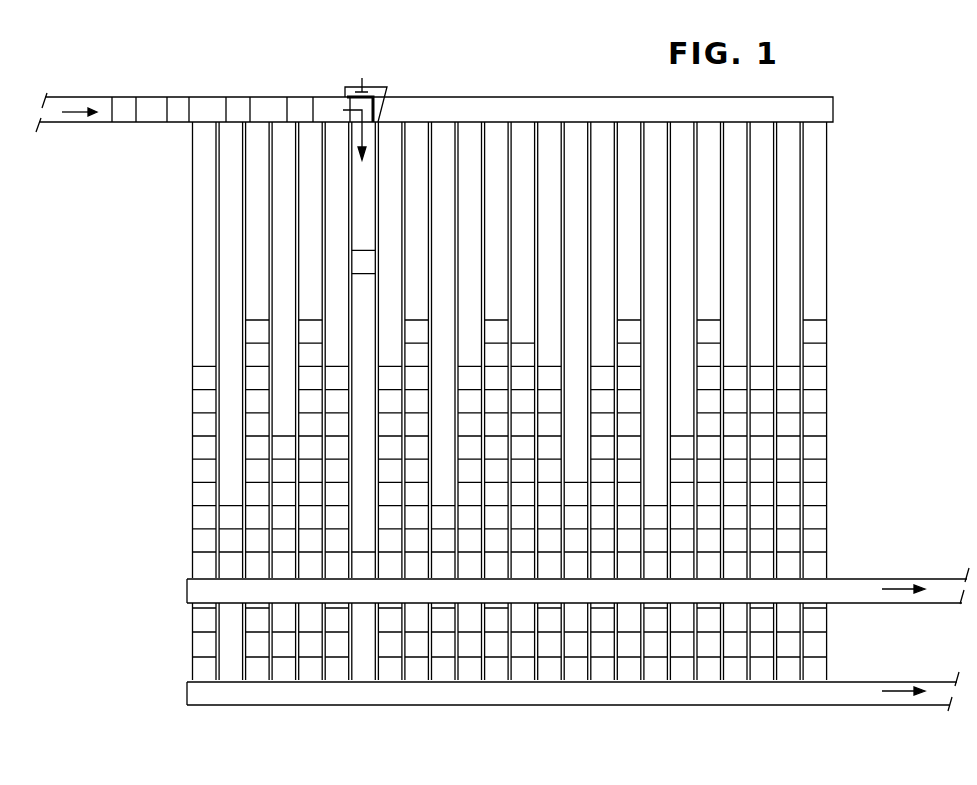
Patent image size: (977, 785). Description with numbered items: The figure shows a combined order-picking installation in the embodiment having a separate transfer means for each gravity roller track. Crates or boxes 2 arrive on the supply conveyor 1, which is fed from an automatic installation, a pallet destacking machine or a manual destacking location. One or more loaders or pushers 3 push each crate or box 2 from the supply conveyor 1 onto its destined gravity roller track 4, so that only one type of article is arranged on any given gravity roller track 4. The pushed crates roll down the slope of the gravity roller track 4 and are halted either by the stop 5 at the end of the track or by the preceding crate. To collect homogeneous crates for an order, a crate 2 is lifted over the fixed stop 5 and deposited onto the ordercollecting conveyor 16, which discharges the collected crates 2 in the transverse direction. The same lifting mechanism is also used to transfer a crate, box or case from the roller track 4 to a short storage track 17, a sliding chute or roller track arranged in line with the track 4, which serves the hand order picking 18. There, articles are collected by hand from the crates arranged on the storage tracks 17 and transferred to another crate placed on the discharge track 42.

The supply conveyor 1 is at (73, 105).
The crates or boxes 2 is at (127, 108).
The loader or pusher 3 is at (382, 90).
The gravity roller track 4 is at (525, 213).
The stop 5 is at (200, 577).
The ordercollecting conveyor 16 is at (865, 593).
The storage track 17 is at (210, 643).
The hand order picking 18 is at (545, 642).
The discharge track 42 is at (837, 688).